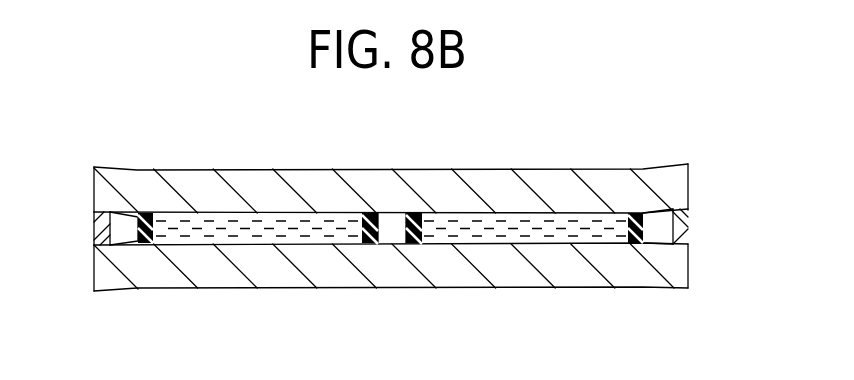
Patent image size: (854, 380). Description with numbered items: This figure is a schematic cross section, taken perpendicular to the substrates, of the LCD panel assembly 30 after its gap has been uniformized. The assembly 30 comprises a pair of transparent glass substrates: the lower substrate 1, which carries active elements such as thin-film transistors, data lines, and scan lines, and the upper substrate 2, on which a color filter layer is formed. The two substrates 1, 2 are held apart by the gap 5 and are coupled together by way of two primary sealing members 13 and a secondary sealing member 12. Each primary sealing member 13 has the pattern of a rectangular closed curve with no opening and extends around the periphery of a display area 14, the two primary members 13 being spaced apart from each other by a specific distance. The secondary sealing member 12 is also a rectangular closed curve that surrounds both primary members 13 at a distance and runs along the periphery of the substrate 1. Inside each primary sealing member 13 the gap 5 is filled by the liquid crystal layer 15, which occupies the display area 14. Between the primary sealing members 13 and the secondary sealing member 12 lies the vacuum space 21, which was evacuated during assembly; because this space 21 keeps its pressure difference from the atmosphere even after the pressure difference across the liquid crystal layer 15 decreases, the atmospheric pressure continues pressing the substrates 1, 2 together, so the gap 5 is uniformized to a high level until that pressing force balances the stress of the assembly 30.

The LCD panel assembly 30 is at (596, 103).
The lower substrate 1 is at (681, 265).
The upper substrate 2 is at (677, 190).
The gap 5 is at (88, 212).
The secondary sealing member 12 is at (686, 228).
The primary sealing member 13 is at (369, 215).
The display area 14 is at (357, 158).
The liquid crystal layer 15 is at (284, 232).
The vacuum space 21 is at (125, 222).